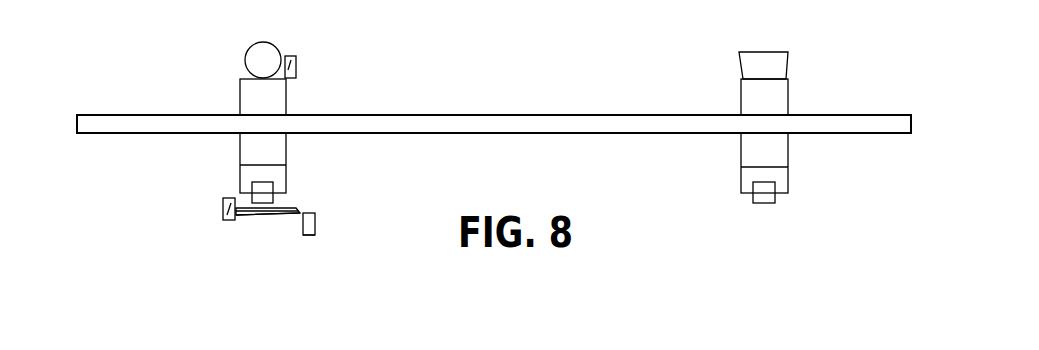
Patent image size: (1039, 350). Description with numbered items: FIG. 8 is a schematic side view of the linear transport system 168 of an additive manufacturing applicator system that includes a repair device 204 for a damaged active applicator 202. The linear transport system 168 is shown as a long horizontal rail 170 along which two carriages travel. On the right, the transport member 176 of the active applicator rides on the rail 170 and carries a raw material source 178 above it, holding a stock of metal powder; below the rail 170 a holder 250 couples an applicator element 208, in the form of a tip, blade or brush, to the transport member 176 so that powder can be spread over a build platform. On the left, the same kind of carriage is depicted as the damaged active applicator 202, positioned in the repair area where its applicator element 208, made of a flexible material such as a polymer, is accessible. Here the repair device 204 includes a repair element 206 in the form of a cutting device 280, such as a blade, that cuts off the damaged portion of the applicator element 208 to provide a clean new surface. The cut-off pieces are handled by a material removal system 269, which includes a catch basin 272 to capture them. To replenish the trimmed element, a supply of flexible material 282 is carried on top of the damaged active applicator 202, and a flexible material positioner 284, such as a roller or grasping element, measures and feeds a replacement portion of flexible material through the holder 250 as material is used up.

The linear transport system 168 is at (922, 101).
The rail 170 is at (477, 127).
The transport member 176 is at (763, 97).
The raw material source 178 is at (766, 62).
The damaged active applicator 202 is at (303, 89).
The repair device 204 is at (324, 244).
The repair element 206 is at (277, 217).
The applicator element 208 is at (273, 198).
The holder 250 is at (265, 173).
The material removal system 269 is at (315, 220).
The catch basin 272 is at (225, 220).
The cutting device 280 is at (268, 214).
The supply of flexible material 282 is at (253, 62).
The flexible material positioner 284 is at (297, 63).